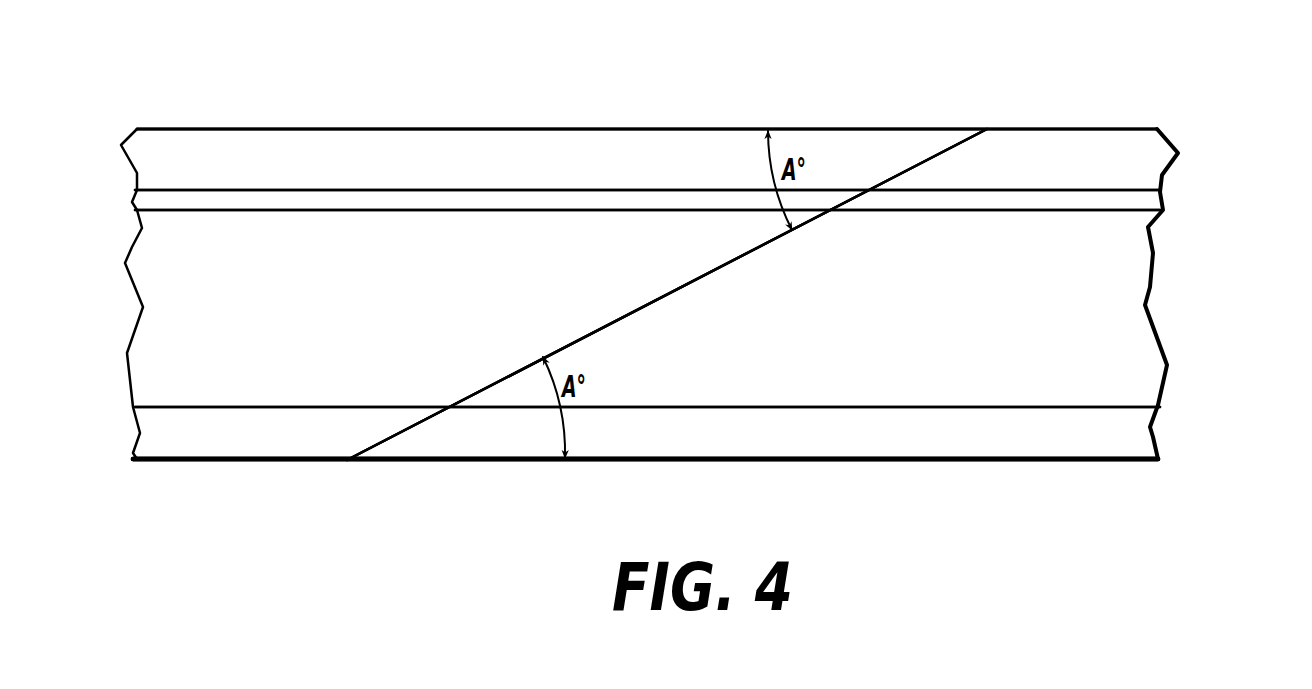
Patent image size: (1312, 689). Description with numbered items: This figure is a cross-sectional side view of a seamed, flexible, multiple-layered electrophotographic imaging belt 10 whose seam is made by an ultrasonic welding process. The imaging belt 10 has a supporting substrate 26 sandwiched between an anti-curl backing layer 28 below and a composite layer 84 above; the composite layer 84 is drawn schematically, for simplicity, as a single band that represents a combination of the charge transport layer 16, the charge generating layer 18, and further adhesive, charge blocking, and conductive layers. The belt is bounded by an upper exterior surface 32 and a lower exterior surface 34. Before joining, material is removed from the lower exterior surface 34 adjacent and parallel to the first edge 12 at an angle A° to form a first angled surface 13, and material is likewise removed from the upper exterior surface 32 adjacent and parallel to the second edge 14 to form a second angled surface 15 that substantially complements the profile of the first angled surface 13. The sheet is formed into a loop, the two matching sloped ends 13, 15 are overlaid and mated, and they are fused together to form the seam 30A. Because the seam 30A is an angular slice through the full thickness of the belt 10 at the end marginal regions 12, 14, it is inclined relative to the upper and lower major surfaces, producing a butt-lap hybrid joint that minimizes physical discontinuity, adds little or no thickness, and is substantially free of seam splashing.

The flexible electrophotographic imaging belt 10 is at (1042, 93).
The first edge 12 is at (873, 120).
The first angled surface 13 is at (592, 317).
The second edge 14 is at (427, 468).
The second angled surface 15 is at (675, 310).
The charge transport layer 16 is at (1165, 152).
The charge generating layer 18 is at (1158, 200).
The supporting substrate 26 is at (1142, 272).
The anti-curl backing layer 28 is at (1138, 444).
The seam 30A is at (648, 300).
The upper exterior surface 32 is at (337, 112).
The lower exterior surface 34 is at (995, 470).
The composite layer 84 is at (110, 127).